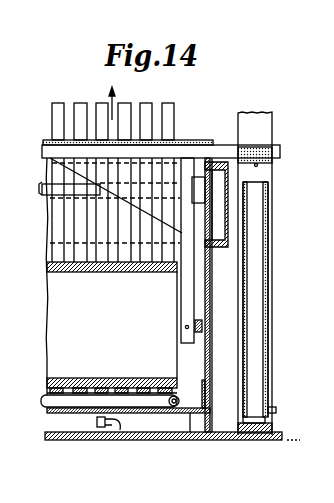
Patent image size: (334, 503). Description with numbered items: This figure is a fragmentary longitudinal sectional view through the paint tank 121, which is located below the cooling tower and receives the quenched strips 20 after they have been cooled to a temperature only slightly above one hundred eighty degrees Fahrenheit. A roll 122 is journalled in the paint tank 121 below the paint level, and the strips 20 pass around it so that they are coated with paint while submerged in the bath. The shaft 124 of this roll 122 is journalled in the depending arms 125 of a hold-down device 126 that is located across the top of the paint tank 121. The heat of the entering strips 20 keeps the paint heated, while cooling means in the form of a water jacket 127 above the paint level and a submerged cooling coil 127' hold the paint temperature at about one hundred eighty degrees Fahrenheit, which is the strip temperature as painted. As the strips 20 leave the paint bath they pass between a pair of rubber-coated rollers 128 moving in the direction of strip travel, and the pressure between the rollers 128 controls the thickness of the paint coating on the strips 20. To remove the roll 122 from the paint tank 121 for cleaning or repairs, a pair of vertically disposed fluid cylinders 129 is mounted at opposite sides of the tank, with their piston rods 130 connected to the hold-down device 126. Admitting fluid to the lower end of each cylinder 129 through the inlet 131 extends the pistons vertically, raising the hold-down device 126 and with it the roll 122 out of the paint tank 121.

The strips 20 is at (83, 110).
The paint tank 121 is at (157, 411).
The roll 122 is at (162, 345).
The shaft 124 is at (202, 326).
The depending arms 125 is at (190, 295).
The hold-down device 126 is at (217, 150).
The water jacket 127 is at (263, 204).
The submerged cooling coil 127' is at (110, 433).
The rubber-coated rollers 128 is at (88, 191).
The fluid cylinders 129 is at (257, 257).
The piston rods 130 is at (258, 166).
The inlet 131 is at (274, 407).